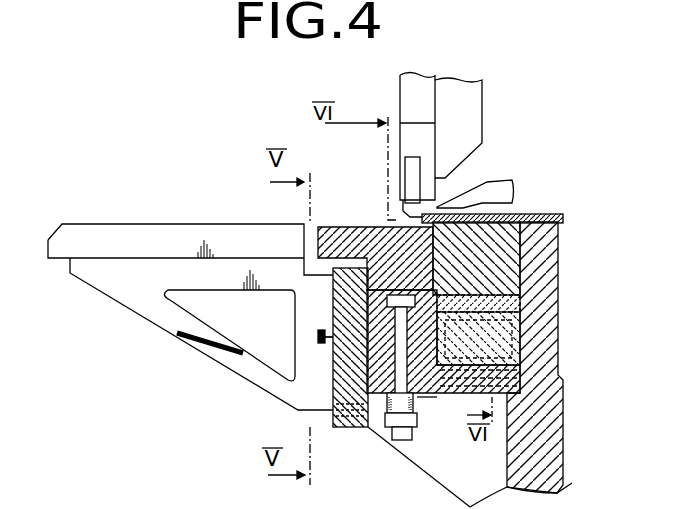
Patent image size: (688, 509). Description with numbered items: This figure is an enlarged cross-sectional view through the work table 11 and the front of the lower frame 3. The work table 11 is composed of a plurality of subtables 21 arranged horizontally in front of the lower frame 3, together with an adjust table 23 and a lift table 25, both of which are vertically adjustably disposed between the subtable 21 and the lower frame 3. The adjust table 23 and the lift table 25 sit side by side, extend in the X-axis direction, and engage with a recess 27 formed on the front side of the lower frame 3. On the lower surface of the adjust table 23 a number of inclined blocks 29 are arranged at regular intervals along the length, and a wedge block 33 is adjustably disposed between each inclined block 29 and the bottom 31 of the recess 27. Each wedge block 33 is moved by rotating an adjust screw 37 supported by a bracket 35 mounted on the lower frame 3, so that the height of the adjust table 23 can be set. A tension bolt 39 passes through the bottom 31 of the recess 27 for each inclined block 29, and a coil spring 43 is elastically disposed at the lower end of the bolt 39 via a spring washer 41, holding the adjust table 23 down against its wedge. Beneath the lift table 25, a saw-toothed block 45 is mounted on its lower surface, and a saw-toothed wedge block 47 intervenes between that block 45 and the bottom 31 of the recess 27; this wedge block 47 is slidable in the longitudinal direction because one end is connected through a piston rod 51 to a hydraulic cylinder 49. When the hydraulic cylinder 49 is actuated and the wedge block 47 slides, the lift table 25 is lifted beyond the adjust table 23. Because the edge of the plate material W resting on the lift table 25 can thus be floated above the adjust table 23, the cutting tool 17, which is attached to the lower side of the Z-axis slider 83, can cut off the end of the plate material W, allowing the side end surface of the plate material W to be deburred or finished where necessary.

The lower frame 3 is at (563, 438).
The work table 11 is at (178, 343).
The cutting tool 17 is at (402, 177).
The subtable 21 is at (147, 226).
The adjust table 23 is at (345, 229).
The lift table 25 is at (520, 246).
The recess 27 is at (333, 316).
The inclined block 29 is at (332, 347).
The bottom of the recess 31 is at (443, 358).
The wedge block 33 is at (315, 358).
The bracket 35 is at (353, 428).
The adjust screw 37 is at (318, 337).
The tension bolt 39 is at (417, 397).
The spring washer 41 is at (392, 432).
The coil spring 43 is at (418, 415).
The saw-toothed block 45 is at (520, 297).
The saw-toothed wedge block 47 is at (520, 343).
The hydraulic cylinder 49 is at (558, 367).
The piston rod 51 is at (520, 326).
The Z-axis slider 83 is at (403, 110).
The plate material W is at (537, 214).